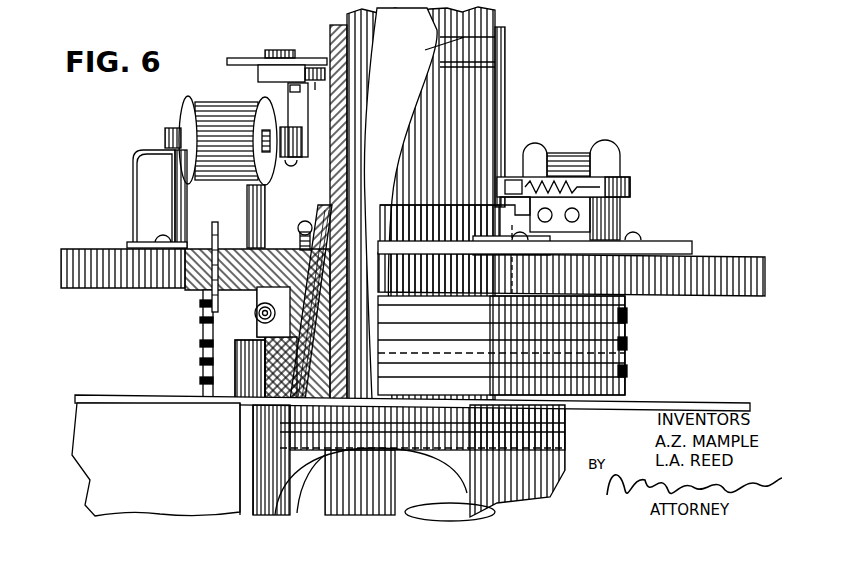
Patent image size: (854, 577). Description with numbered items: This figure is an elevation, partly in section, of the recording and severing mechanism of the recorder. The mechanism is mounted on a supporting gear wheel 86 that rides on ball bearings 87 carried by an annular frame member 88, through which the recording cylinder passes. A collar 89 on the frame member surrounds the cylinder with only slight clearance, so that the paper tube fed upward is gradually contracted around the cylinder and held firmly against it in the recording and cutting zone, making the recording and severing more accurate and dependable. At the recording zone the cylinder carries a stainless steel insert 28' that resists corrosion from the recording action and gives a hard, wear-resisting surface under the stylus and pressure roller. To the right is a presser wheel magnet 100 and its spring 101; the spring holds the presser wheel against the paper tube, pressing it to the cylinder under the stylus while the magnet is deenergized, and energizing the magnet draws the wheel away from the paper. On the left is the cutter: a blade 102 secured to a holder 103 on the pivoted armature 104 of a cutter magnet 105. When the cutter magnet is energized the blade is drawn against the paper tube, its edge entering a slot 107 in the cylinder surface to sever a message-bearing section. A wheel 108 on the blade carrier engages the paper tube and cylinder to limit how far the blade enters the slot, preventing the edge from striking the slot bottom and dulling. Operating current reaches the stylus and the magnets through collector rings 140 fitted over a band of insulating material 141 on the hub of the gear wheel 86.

The insert 28' is at (452, 203).
The supporting gear wheel 86 is at (712, 270).
The ball bearings 87 is at (262, 313).
The annular frame member 88 is at (257, 417).
The collar 89 is at (320, 214).
The presser wheel magnet 100 is at (569, 166).
The spring 101 is at (550, 185).
The blade 102 is at (313, 62).
The holder 103 is at (237, 59).
The pivoted armature 104 is at (308, 138).
The cutter magnet 105 is at (238, 151).
The slot 107 is at (332, 60).
The wheel 108 is at (321, 88).
The collector rings 140 is at (627, 372).
The band of insulating material 141 is at (204, 379).